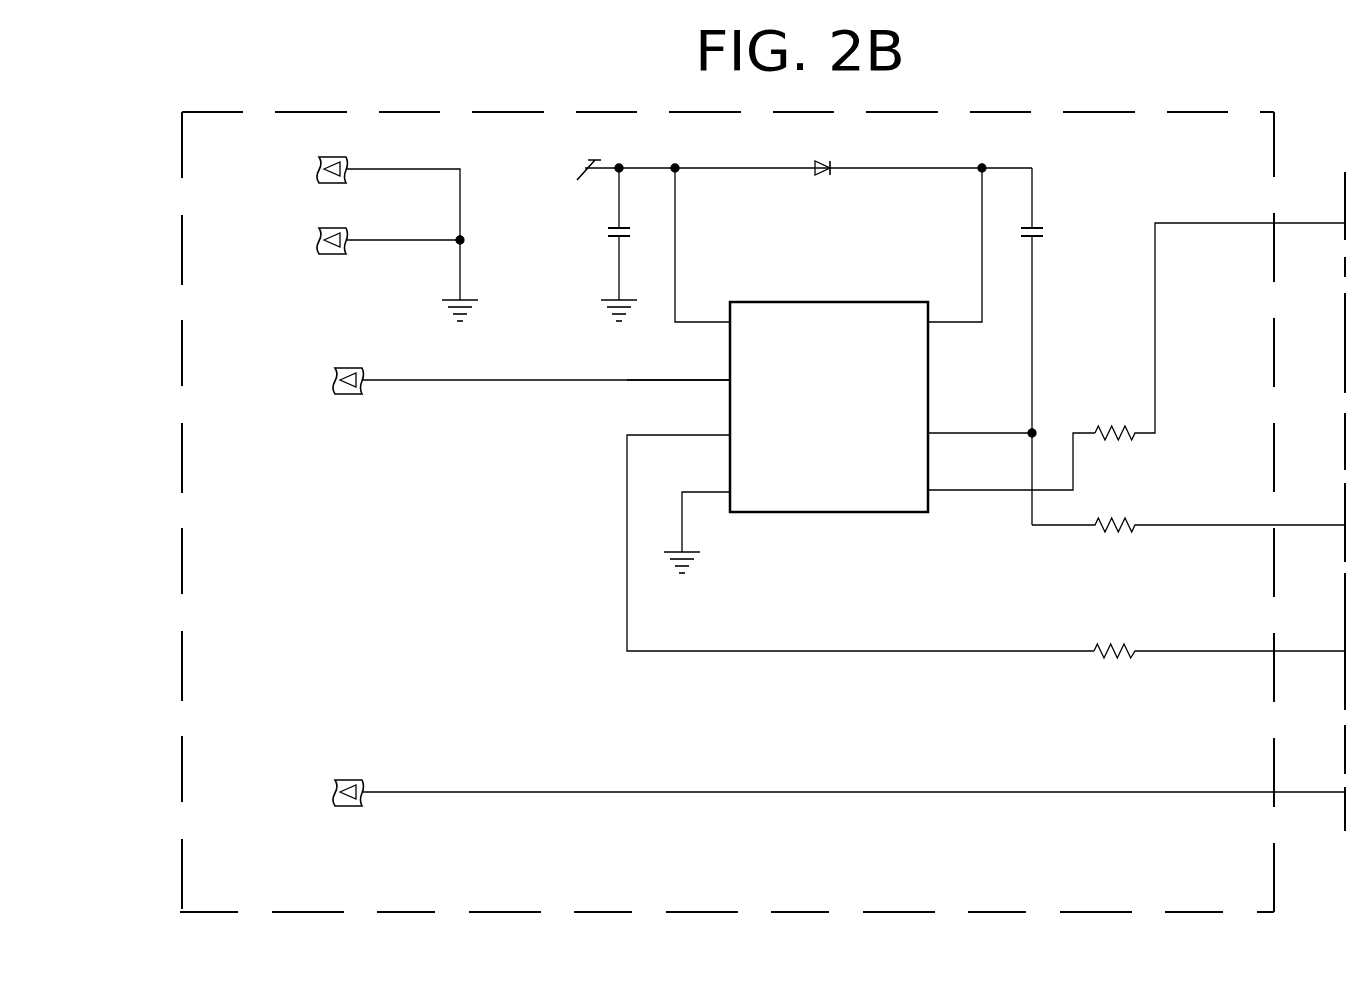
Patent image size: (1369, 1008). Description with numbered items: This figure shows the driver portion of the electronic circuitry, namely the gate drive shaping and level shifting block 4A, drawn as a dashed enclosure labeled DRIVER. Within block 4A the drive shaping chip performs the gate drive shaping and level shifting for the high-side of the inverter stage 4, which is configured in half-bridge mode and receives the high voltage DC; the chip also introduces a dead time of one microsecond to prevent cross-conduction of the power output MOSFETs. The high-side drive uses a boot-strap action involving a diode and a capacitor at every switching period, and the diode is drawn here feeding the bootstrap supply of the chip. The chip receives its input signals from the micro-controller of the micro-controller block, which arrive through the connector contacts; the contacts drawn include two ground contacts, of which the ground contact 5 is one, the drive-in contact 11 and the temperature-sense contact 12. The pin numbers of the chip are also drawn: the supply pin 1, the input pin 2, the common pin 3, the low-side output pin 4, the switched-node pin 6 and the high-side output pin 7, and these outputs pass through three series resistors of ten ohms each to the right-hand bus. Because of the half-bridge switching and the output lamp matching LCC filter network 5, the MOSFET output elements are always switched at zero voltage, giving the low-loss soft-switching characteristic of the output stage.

The gate drive shaping and level shifting block 4A is at (178, 480).
The output lamp matching LCC filter network 5 is at (341, 220).
The connector J1 pin 11 (drive in) 11 is at (475, 381).
The connector J1 pin 12 (temp sense) 12 is at (779, 795).
The U1 pin 1 (VCC) 1 is at (702, 245).
The U1 pin 2 (IN) 2 is at (678, 366).
The U1 pin 3 (COM) 3 is at (697, 519).
The inverter stage 4 is at (860, 529).
The U1 pin 6 (VS) 6 is at (982, 422).
The U1 pin 7 (HO) 7 is at (1011, 461).